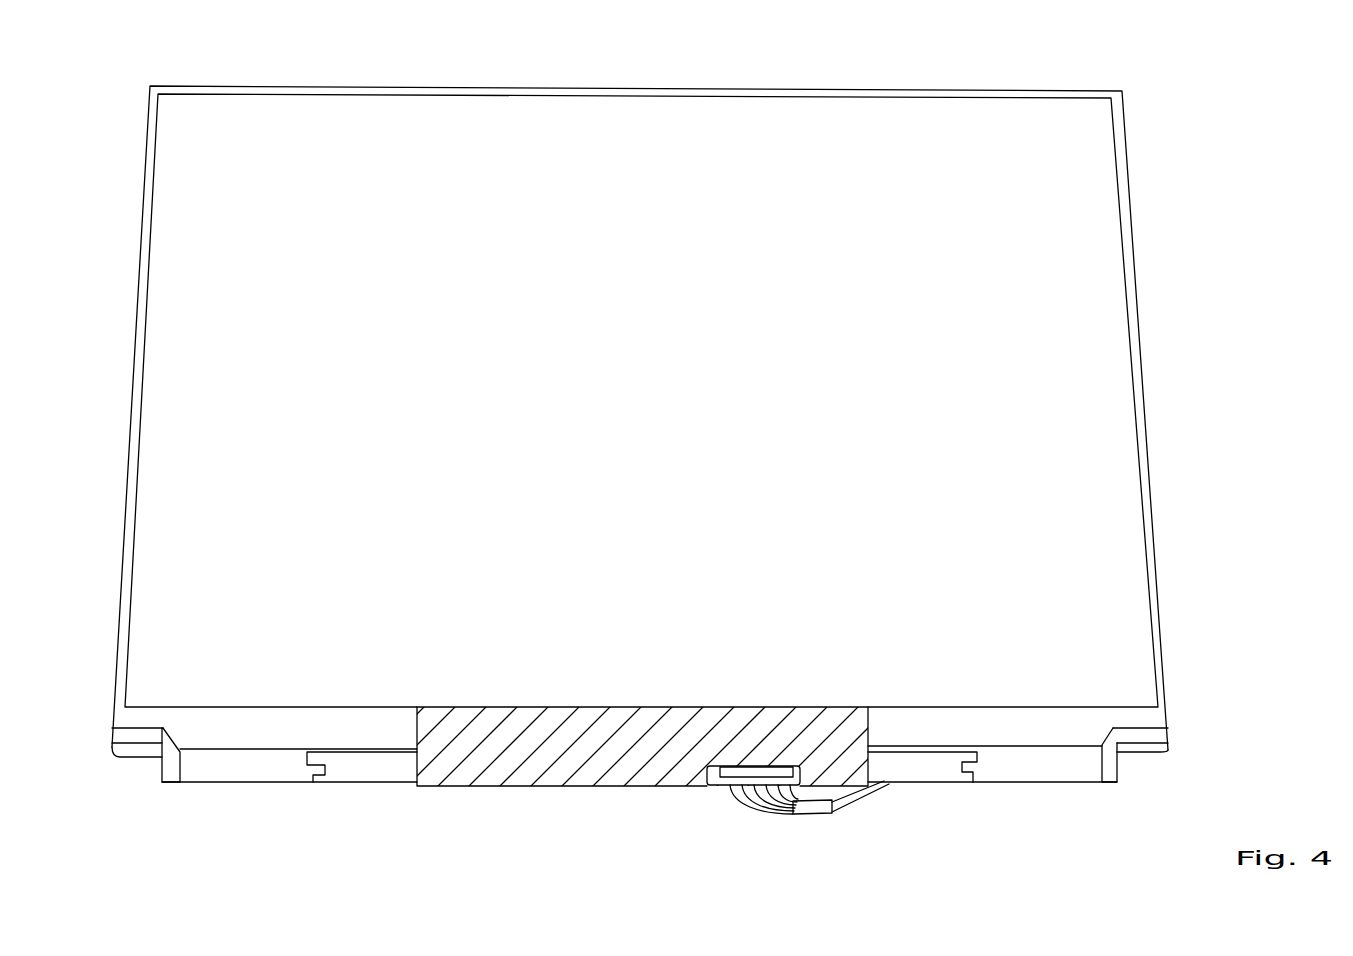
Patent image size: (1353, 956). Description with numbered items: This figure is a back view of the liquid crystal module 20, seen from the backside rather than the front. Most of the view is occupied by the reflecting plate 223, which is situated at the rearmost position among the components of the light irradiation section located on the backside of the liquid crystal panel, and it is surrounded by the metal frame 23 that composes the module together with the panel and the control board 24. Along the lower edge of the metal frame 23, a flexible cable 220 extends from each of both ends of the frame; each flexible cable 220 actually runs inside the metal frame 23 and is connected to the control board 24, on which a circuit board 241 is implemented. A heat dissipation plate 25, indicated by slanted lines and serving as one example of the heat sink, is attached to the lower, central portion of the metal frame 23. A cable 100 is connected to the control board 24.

The liquid crystal module 20 is at (1113, 63).
The metal frame 23 is at (1160, 657).
The reflecting plate 223 is at (968, 112).
The flexible cable 220 is at (172, 768).
The control board 24 is at (250, 768).
The circuit board 241 is at (363, 772).
The heat dissipation plate 25 is at (592, 778).
The cable 100 is at (752, 809).